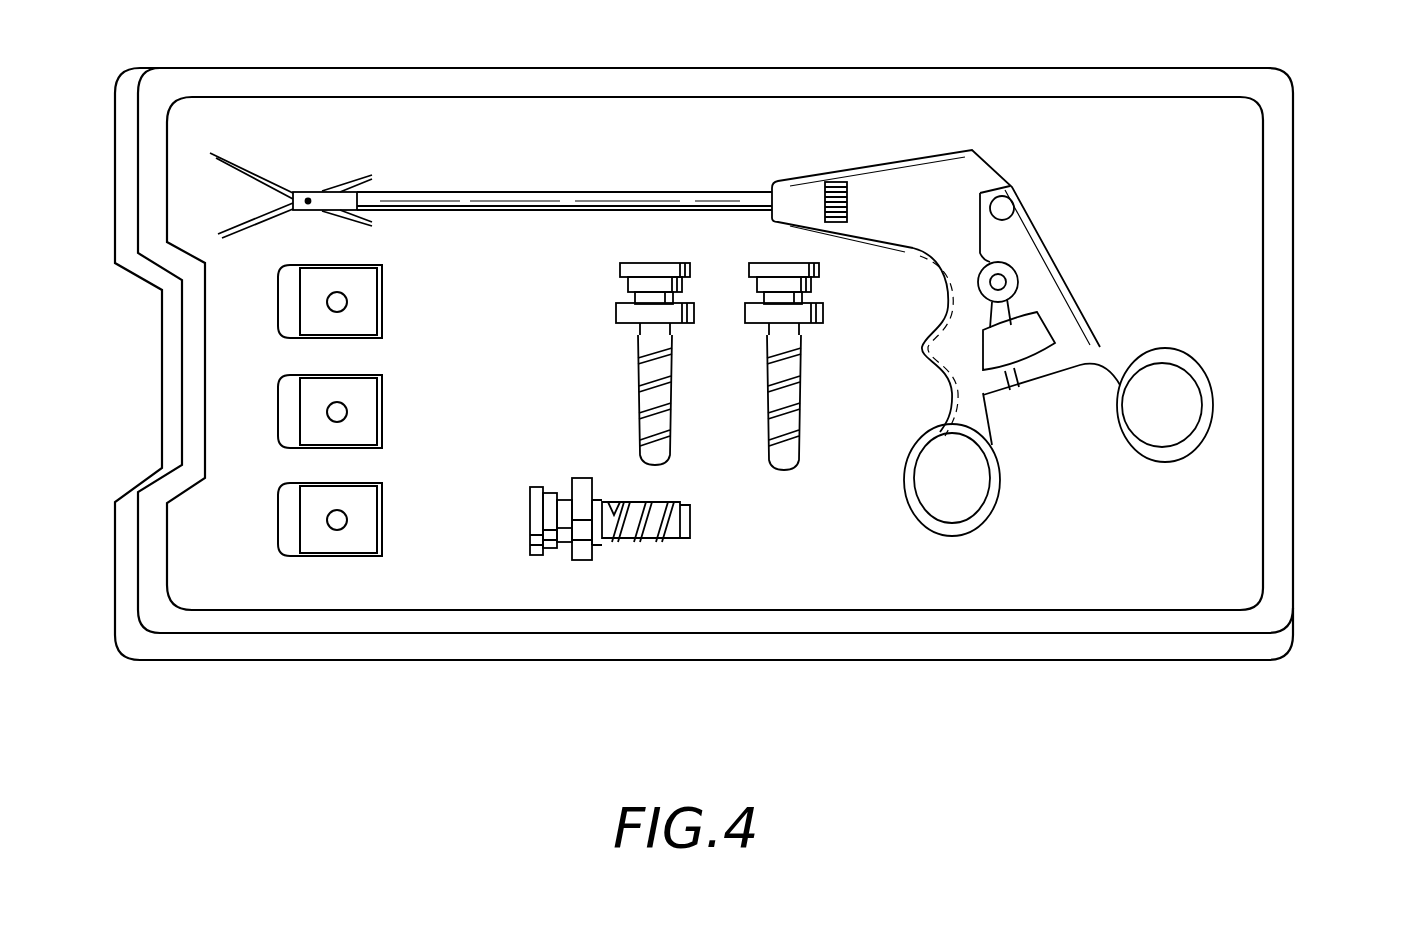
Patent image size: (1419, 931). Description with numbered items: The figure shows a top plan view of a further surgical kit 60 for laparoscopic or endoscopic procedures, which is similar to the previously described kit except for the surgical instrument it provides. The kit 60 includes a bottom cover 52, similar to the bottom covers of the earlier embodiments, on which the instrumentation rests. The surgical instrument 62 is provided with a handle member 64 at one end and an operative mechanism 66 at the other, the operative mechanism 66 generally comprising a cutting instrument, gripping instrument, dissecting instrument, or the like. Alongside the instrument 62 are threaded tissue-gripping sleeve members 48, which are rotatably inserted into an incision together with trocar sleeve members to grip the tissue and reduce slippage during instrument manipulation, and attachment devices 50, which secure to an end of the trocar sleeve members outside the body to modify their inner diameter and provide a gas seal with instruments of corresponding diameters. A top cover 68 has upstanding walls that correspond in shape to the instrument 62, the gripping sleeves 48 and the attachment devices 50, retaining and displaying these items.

The kit 60 is at (1307, 167).
The bottom cover 52 is at (1295, 297).
The top cover 68 is at (1272, 438).
The attachment devices 50 is at (382, 425).
The tissue-gripping sleeve members 48 is at (782, 470).
The surgical instrument 62 is at (672, 195).
The handle member 64 is at (925, 170).
The operative mechanism 66 is at (347, 185).